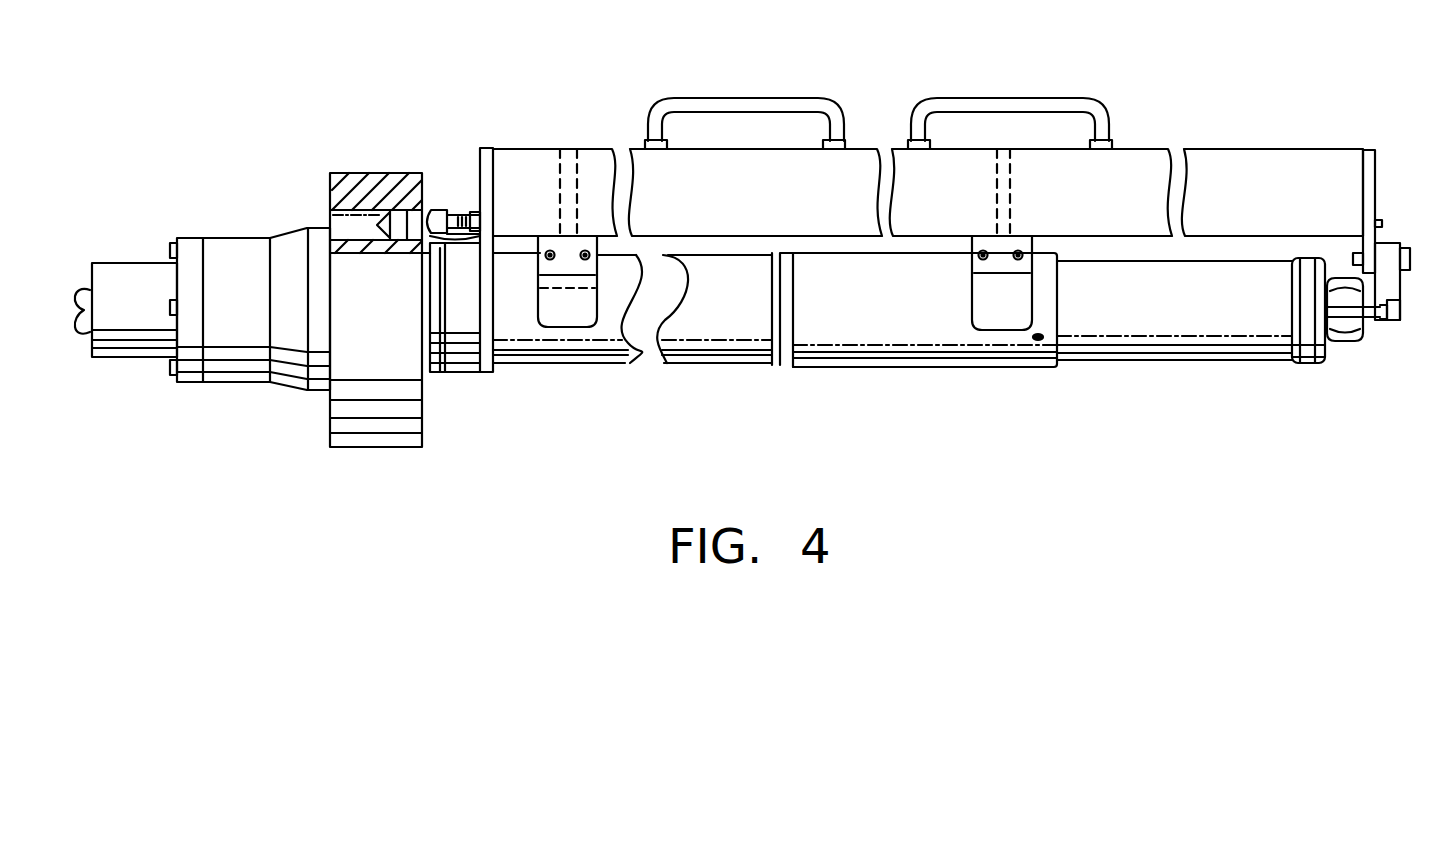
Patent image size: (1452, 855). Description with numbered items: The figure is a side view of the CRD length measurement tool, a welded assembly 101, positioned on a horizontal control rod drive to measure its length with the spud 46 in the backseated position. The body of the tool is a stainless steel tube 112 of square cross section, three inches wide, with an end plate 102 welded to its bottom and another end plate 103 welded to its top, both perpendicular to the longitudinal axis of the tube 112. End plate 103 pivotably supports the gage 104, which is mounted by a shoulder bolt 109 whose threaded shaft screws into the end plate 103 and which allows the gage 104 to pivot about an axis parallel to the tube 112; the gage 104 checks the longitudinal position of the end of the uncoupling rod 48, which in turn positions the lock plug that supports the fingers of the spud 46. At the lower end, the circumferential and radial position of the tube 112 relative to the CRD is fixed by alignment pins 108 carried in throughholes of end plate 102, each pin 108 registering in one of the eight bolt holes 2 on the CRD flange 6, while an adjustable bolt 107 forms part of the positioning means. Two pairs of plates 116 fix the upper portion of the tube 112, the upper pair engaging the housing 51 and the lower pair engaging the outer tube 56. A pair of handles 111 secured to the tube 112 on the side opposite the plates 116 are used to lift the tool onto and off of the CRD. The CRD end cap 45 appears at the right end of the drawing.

The bolt hole 2 is at (333, 223).
The CRD flange 6 is at (385, 448).
The end cap 45 is at (1303, 363).
The spud 46 is at (1333, 340).
The uncoupling rod 48 is at (1367, 323).
The housing 51 is at (948, 367).
The outer tube 56 is at (713, 365).
The welded assembly 101 is at (1082, 83).
The end plate 102 is at (480, 160).
The end plate 103 is at (1377, 173).
The gage 104 is at (1403, 287).
The adjustable bolt 107 is at (437, 210).
The alignment pin 108 is at (397, 210).
The shoulder bolt 109 is at (1410, 263).
The handle 111 is at (747, 98).
The tube 112 is at (863, 148).
The plate 116 is at (580, 315).